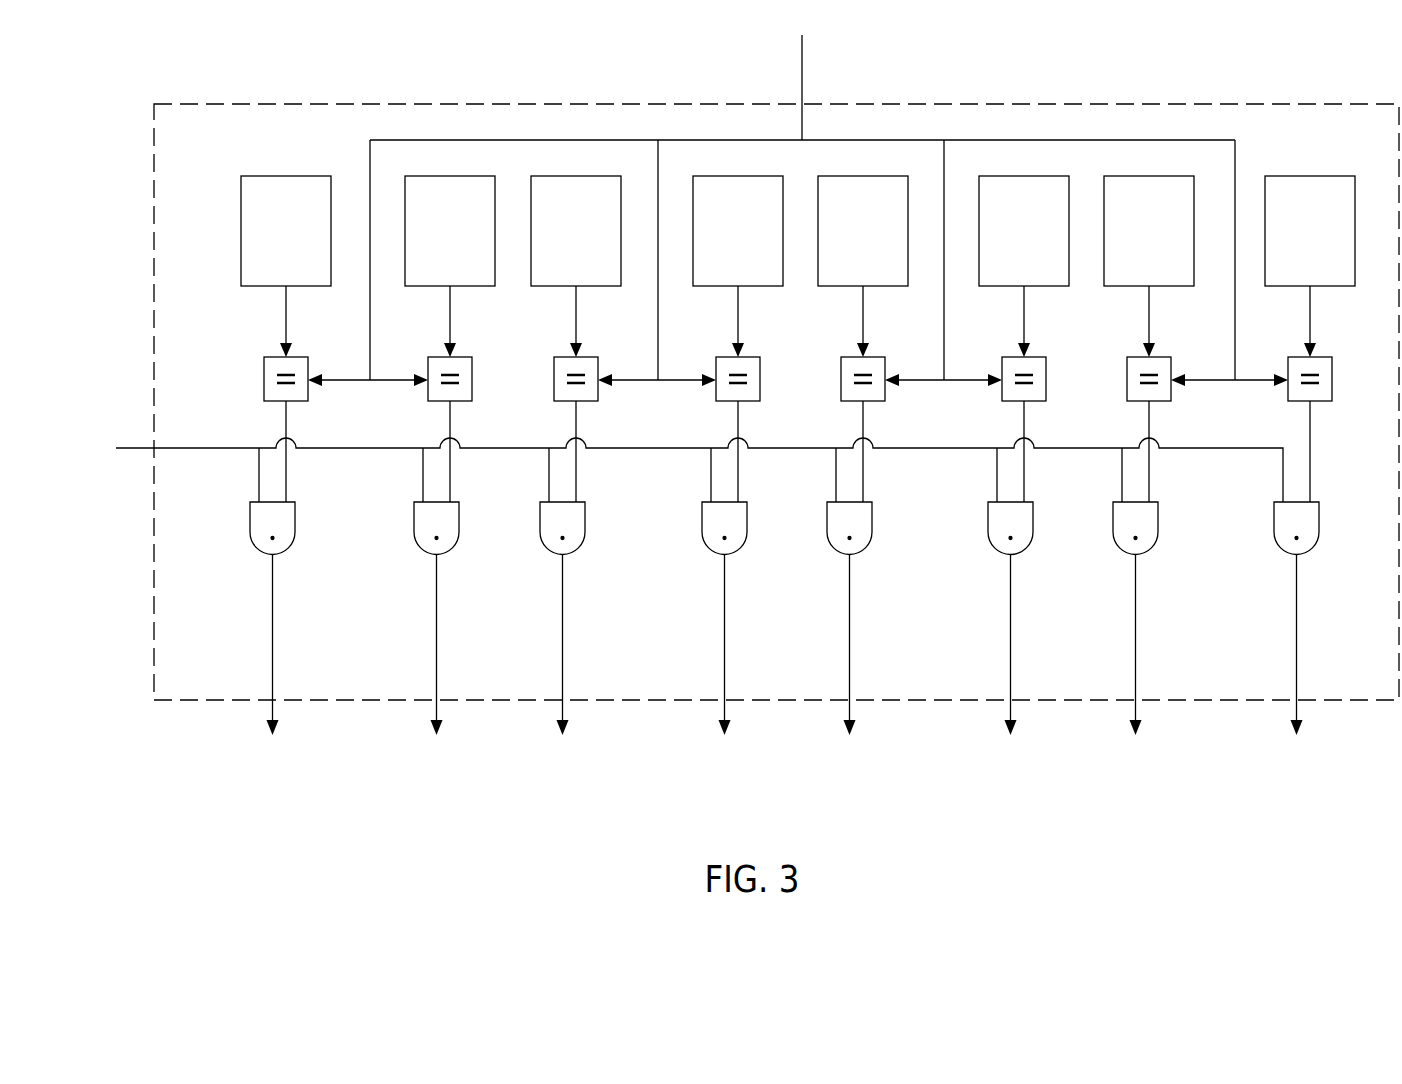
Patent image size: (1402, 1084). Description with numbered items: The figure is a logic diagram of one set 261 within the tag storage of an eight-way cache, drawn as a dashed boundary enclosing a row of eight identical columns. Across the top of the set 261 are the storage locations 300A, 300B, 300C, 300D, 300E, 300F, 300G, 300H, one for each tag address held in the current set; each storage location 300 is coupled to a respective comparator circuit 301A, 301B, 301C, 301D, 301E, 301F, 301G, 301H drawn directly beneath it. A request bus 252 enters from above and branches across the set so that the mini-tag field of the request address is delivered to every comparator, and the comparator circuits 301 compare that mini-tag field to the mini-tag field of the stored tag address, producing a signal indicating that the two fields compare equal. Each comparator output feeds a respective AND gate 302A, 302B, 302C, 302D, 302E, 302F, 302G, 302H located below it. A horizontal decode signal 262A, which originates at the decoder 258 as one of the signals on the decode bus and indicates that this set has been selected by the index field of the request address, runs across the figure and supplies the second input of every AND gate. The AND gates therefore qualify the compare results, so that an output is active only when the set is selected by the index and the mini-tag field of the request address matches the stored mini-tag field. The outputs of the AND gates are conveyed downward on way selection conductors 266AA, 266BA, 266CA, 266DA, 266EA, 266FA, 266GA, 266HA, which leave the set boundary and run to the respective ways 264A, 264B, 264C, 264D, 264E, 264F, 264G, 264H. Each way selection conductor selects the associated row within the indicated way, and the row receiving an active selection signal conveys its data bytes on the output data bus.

The set 261 is at (1142, 103).
The request bus 252 is at (803, 90).
The decode signal 262A is at (340, 448).
The decoder 258 is at (96, 460).
The storage location 300 is at (236, 160).
The comparator circuits 301 is at (236, 400).
The storage location 300A is at (261, 270).
The storage location 300B is at (425, 270).
The storage location 300C is at (551, 270).
The storage location 300D is at (713, 270).
The storage location 300E is at (838, 270).
The storage location 300F is at (999, 270).
The storage location 300G is at (1124, 270).
The storage location 300H is at (1285, 270).
The comparator circuit 301A is at (297, 355).
The comparator circuit 301B is at (461, 355).
The comparator circuit 301C is at (587, 355).
The comparator circuit 301D is at (749, 355).
The comparator circuit 301E is at (874, 355).
The comparator circuit 301F is at (1035, 355).
The comparator circuit 301G is at (1160, 355).
The comparator circuit 301H is at (1321, 355).
The AND gate 302A is at (275, 557).
The AND gate 302B is at (439, 557).
The AND gate 302C is at (565, 557).
The AND gate 302D is at (727, 557).
The AND gate 302E is at (852, 557).
The AND gate 302F is at (1013, 557).
The AND gate 302G is at (1138, 557).
The AND gate 302H is at (1299, 557).
The way selection conductor 266AA is at (272, 643).
The way selection conductor 266BA is at (436, 643).
The way selection conductor 266CA is at (562, 643).
The way selection conductor 266DA is at (724, 643).
The way selection conductor 266EA is at (849, 643).
The way selection conductor 266FA is at (1010, 643).
The way selection conductor 266GA is at (1135, 643).
The way selection conductor 266HA is at (1296, 643).
The way 264A is at (273, 768).
The way 264B is at (437, 768).
The way 264C is at (563, 768).
The way 264D is at (725, 768).
The way 264E is at (850, 768).
The way 264F is at (1011, 768).
The way 264G is at (1136, 768).
The way 264H is at (1297, 768).